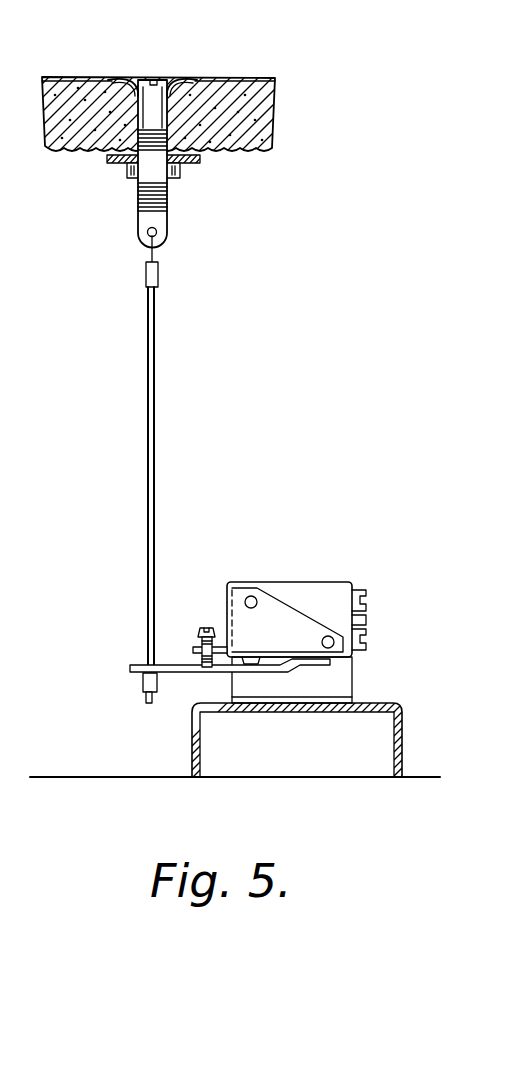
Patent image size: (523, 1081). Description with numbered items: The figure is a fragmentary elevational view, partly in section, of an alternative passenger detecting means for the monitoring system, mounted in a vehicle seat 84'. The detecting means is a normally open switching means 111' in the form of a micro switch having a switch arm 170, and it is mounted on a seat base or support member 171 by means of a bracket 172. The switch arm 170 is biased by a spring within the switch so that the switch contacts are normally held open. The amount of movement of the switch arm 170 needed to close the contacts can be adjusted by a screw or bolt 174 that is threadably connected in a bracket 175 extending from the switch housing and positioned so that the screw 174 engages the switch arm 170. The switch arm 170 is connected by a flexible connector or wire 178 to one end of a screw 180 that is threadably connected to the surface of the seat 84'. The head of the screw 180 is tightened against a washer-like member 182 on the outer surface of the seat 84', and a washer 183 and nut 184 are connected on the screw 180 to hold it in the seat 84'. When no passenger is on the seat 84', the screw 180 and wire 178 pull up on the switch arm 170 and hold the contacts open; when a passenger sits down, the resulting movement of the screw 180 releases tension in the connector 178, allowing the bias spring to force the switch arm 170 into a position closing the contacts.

The seat 84' is at (172, 87).
The washer-like member 182 is at (130, 90).
The washer 183 is at (180, 167).
The nut 184 is at (130, 170).
The screw 180 is at (167, 207).
The flexible connector or wire 178 is at (147, 387).
The switching means 111' is at (298, 587).
The screw or bolt 174 is at (205, 627).
The bracket 175 is at (193, 650).
The switch arm 170 is at (175, 677).
The seat base or support member 171 is at (190, 757).
The bracket 172 is at (302, 690).